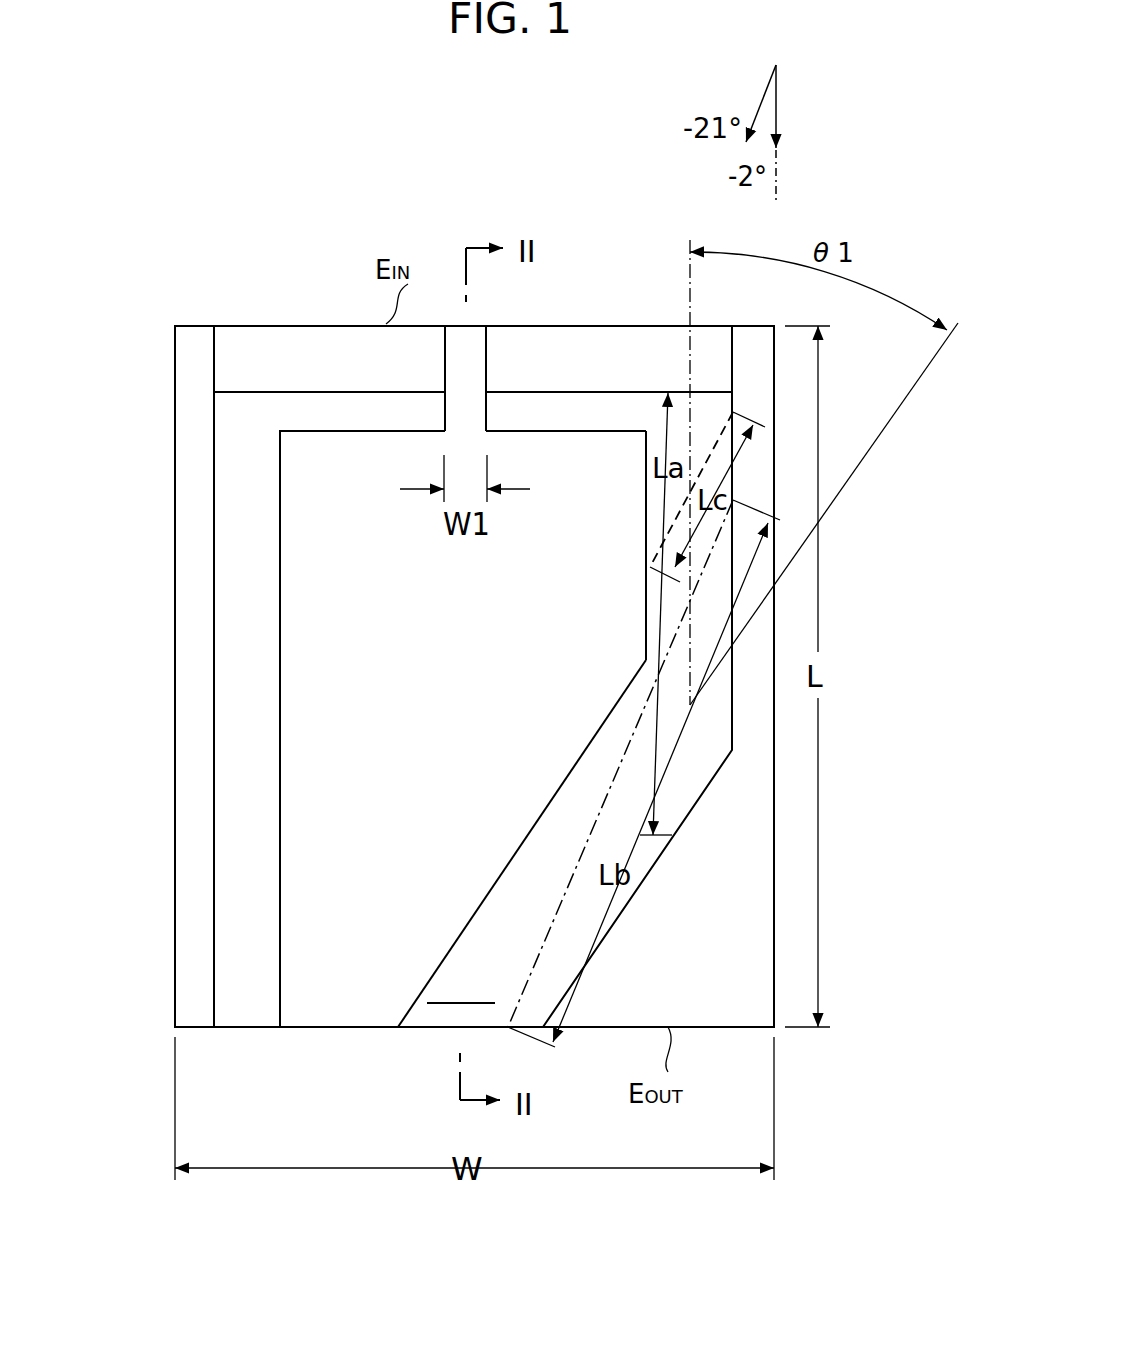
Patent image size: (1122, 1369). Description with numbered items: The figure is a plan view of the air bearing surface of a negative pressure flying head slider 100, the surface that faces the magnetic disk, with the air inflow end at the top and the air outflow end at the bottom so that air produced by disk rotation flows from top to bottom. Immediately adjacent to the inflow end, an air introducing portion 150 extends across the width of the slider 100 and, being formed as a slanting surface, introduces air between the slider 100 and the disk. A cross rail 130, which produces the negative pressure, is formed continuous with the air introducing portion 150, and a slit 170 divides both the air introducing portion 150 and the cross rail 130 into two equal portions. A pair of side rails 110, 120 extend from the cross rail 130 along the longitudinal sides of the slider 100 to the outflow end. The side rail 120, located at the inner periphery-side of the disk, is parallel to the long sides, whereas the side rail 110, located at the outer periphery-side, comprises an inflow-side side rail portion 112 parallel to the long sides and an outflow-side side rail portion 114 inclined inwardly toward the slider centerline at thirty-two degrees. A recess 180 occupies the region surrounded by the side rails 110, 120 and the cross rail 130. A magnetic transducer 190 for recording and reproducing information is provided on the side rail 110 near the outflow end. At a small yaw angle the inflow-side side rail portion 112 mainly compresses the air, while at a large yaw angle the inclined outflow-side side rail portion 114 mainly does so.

The slider 100 is at (166, 787).
The side rail 110 is at (715, 748).
The inflow-side side rail portion 112 is at (715, 577).
The outflow-side side rail portion 114 is at (645, 860).
The side rail 120 is at (228, 700).
The cross rail 130 is at (610, 405).
The air introducing portion 150 is at (320, 360).
The slit 170 is at (452, 407).
The recess 180 is at (488, 733).
The magnetic transducer 190 is at (440, 1003).